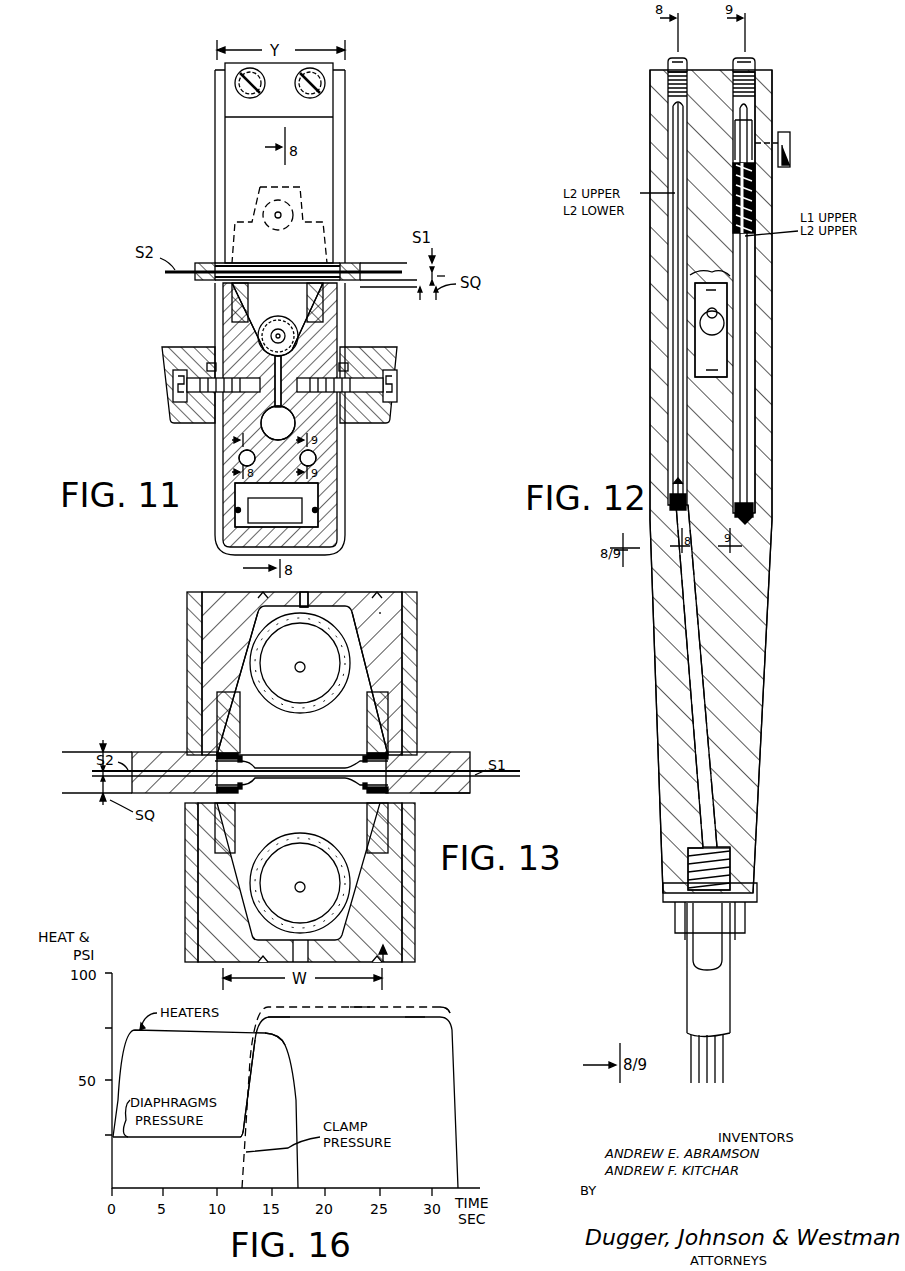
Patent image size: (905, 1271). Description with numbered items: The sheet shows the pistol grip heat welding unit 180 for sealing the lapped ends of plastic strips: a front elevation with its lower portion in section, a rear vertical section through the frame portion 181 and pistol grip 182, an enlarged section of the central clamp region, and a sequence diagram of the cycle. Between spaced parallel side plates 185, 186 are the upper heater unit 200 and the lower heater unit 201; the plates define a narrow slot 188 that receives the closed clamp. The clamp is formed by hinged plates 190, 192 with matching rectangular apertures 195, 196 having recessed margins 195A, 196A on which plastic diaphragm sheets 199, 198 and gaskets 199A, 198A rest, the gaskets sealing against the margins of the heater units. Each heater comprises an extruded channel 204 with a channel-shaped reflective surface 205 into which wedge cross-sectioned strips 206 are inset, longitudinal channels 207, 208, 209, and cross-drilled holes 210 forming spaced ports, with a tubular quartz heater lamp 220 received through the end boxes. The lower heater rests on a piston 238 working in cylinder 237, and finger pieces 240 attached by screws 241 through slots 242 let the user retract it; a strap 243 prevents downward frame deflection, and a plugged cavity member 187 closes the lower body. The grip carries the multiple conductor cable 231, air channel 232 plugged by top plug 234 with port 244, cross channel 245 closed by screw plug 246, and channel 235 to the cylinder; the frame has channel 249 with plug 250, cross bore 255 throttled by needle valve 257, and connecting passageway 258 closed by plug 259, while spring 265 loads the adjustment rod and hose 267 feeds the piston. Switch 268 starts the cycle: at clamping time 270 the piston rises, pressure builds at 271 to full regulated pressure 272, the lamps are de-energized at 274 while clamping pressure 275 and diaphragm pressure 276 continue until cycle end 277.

In FIG. 12, the heat sealing tool 180 is at (778, 351).
In FIG. 12, the frame portion 181 is at (773, 330).
In FIG. 12, the pistol grip 182 is at (763, 705).
In FIG. 11, the side plate 185 is at (345, 137).
In FIG. 13, the side plate 185 is at (417, 620).
In FIG. 11, the side plate 186 is at (215, 137).
In FIG. 13, the side plate 186 is at (187, 628).
In FIG. 11, the bottom cavity member 187 is at (318, 518).
In FIG. 11, the slot 188 is at (436, 276).
In FIG. 13, the slot 188 is at (95, 772).
In FIG. 13, the clamp plate 190 is at (470, 790).
In FIG. 13, the clamp plate 192 is at (470, 755).
In FIG. 13, the rectangular aperture 195 is at (365, 781).
In FIG. 13, the recessed margin 195A is at (408, 790).
In FIG. 13, the rectangular aperture 196 is at (362, 768).
In FIG. 13, the recessed margin 196A is at (410, 760).
In FIG. 13, the plastic diaphragm sheet 198 is at (250, 764).
In FIG. 13, the gasket 198A is at (215, 758).
In FIG. 13, the plastic diaphragm sheet 199 is at (250, 782).
In FIG. 13, the gasket 199A is at (215, 790).
In FIG. 11, the upper heater unit 200 is at (312, 183).
In FIG. 13, the upper heater unit 200 is at (382, 610).
In FIG. 13, the lower heater unit 201 is at (385, 962).
In FIG. 13, the extruded channel 204 is at (402, 660).
In FIG. 11, the reflective surface 205 is at (300, 322).
In FIG. 13, the reflective surface 205 is at (370, 658).
In FIG. 11, the wedge cross-sectioned strips 206 is at (232, 300).
In FIG. 13, the wedge cross-sectioned strips 206 is at (217, 710).
In FIG. 11, the longitudinal channel 207 is at (278, 423).
In FIG. 11, the longitudinal channel 208 is at (245, 464).
In FIG. 11, the longitudinal channel 209 is at (316, 457).
In FIG. 11, the cross-drilled holes 210 is at (232, 438).
In FIG. 13, the cross-drilled holes 210 is at (305, 594).
In FIG. 11, the tubular quartz heater lamp 220 is at (298, 336).
In FIG. 13, the tubular quartz heater lamp 220 is at (318, 658).
In FIG. 12, the multiple conductor cable 231 is at (690, 990).
In FIG. 12, the channel 232 is at (668, 140).
In FIG. 12, the top plug 234 is at (668, 70).
In FIG. 12, the channel 235 is at (740, 592).
In FIG. 11, the cylinder 237 is at (302, 510).
In FIG. 11, the piston 238 is at (318, 488).
In FIG. 11, the finger pieces 240 is at (162, 355).
In FIG. 11, the screws 241 is at (173, 380).
In FIG. 11, the slots 242 is at (207, 365).
In FIG. 11, the strap 243 is at (215, 462).
In FIG. 12, the port 244 is at (755, 484).
In FIG. 12, the cross channel 245 is at (674, 106).
In FIG. 12, the screw plug 246 is at (672, 58).
In FIG. 12, the channel 249 is at (760, 262).
In FIG. 12, the plug 250 is at (755, 72).
In FIG. 12, the cross bore 255 is at (752, 125).
In FIG. 12, the needle valve 257 is at (790, 138).
In FIG. 12, the connecting passageway 258 is at (748, 103).
In FIG. 12, the plug 259 is at (755, 58).
In FIG. 12, the compression spring 265 is at (756, 195).
In FIG. 12, the hose 267 is at (700, 940).
In FIG. 12, the switch 268 is at (712, 313).
In FIG. 16, the clamping time 270 is at (248, 1132).
In FIG. 16, the pressure build-up 271 is at (253, 1100).
In FIG. 16, the full regulated pressure 272 is at (275, 1018).
In FIG. 16, the lamp de-energization 274 is at (283, 1037).
In FIG. 16, the clamping pressure 275 is at (355, 1008).
In FIG. 16, the diaphragm pressure 276 is at (407, 1022).
In FIG. 16, the cycle end 277 is at (450, 1010).